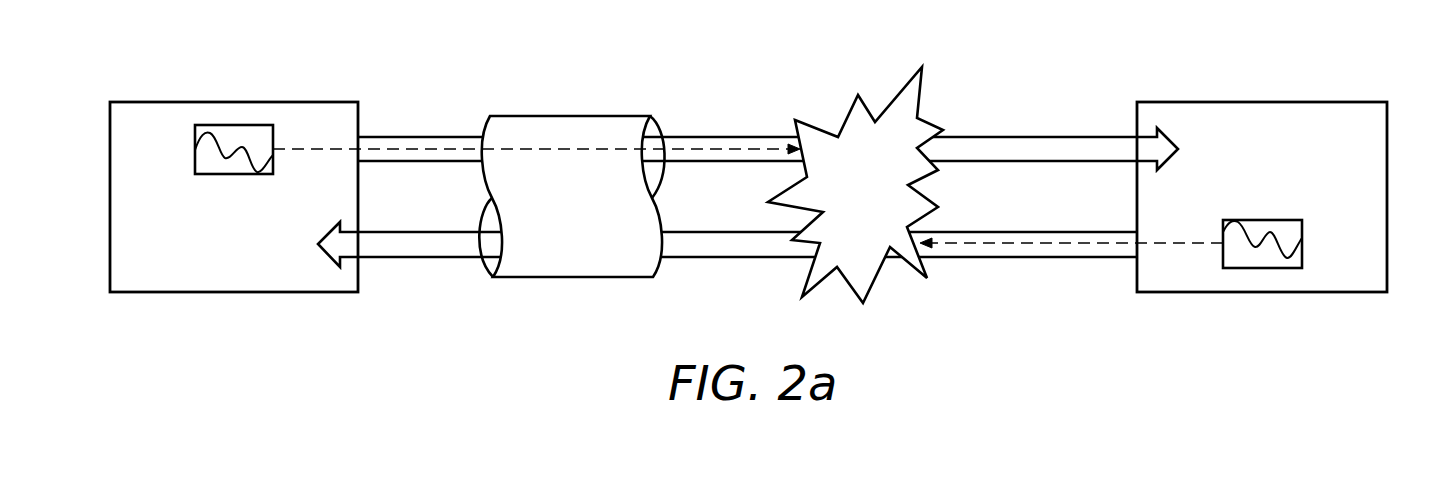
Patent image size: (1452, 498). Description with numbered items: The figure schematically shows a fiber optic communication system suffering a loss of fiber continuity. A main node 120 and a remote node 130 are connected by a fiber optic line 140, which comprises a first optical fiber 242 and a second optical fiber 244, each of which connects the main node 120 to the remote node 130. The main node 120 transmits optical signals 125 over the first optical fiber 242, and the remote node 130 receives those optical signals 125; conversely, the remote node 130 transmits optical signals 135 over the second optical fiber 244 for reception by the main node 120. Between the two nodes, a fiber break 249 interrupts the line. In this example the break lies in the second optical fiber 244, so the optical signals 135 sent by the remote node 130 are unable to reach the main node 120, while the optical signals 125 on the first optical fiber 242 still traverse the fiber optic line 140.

The main node 120 is at (327, 100).
The optical signals 125 is at (226, 176).
The remote node 130 is at (1356, 100).
The optical signals 135 is at (1269, 220).
The fiber optic line 140 is at (622, 279).
The first optical fiber 242 is at (1048, 137).
The second optical fiber 244 is at (1048, 258).
The fiber break 249 is at (836, 236).